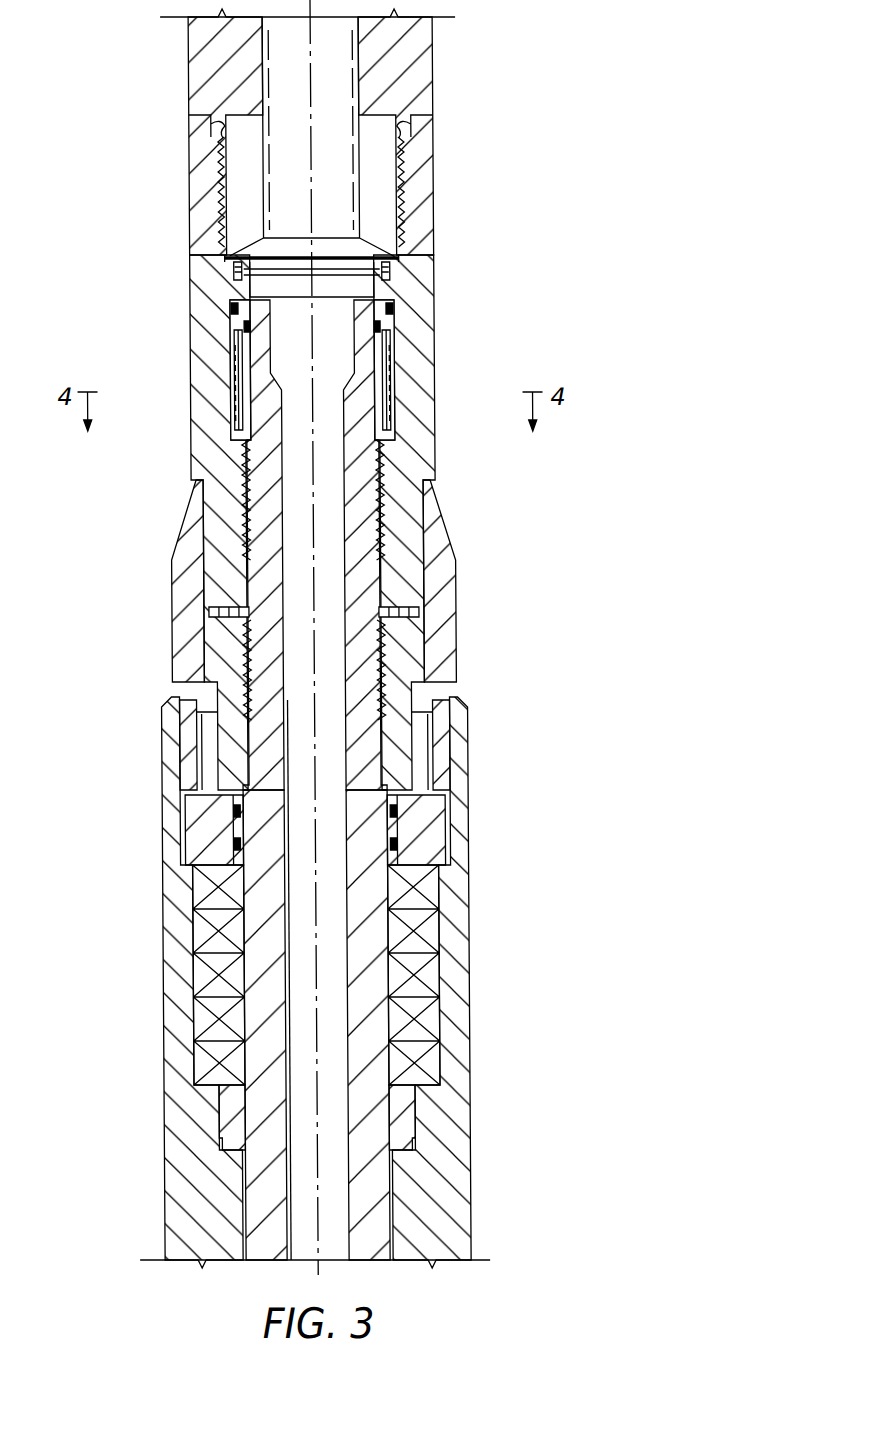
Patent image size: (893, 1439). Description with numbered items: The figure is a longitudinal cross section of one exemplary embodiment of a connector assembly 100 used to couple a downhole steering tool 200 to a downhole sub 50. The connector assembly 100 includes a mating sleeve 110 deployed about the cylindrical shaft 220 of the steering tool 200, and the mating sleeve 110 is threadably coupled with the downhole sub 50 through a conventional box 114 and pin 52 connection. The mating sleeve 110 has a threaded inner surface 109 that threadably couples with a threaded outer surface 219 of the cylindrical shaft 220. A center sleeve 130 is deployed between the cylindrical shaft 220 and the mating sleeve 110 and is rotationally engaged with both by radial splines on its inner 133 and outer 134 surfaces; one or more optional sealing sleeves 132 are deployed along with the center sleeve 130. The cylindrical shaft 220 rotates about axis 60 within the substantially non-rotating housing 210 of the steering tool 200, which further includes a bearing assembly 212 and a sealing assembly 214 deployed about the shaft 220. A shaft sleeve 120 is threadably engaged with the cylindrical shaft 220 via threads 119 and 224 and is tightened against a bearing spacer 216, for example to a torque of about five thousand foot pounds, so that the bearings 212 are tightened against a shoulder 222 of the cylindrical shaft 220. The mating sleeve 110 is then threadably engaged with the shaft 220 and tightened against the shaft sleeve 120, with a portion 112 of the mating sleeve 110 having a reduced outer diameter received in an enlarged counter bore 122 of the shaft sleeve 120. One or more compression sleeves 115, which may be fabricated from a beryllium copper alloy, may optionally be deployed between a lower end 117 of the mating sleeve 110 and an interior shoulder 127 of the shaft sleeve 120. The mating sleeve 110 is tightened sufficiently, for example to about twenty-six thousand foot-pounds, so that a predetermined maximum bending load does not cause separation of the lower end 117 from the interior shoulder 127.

The downhole sub 50 is at (188, 47).
The axis 60 is at (312, 108).
The pin 52 is at (214, 205).
The box 114 is at (222, 140).
The connector assembly 100 is at (111, 236).
The mating sleeve 110 is at (190, 320).
The sealing sleeve 132 is at (396, 292).
The outer surface 134 is at (240, 378).
The inner surface 133 is at (236, 418).
The center sleeve 130 is at (384, 377).
The threaded outer surface 219 is at (398, 500).
The threads 119 is at (416, 700).
The shaft sleeve 120 is at (168, 606).
The portion of the mating sleeve having a reduced outer diameter 112 is at (440, 552).
The enlarged counter bore 122 is at (206, 480).
The threaded inner surface 109 is at (228, 545).
The lower end 117 is at (428, 582).
The interior shoulder 127 is at (216, 628).
The compression sleeve 115 is at (430, 640).
The threads 224 is at (232, 662).
The cylindrical shaft 220 is at (372, 718).
The housing 210 is at (456, 1178).
The bearing spacer 216 is at (226, 820).
The sealing assembly 214 is at (420, 830).
The bearing assembly 212 is at (424, 975).
The shoulder 222 is at (392, 1098).
The downhole steering tool 200 is at (112, 1008).